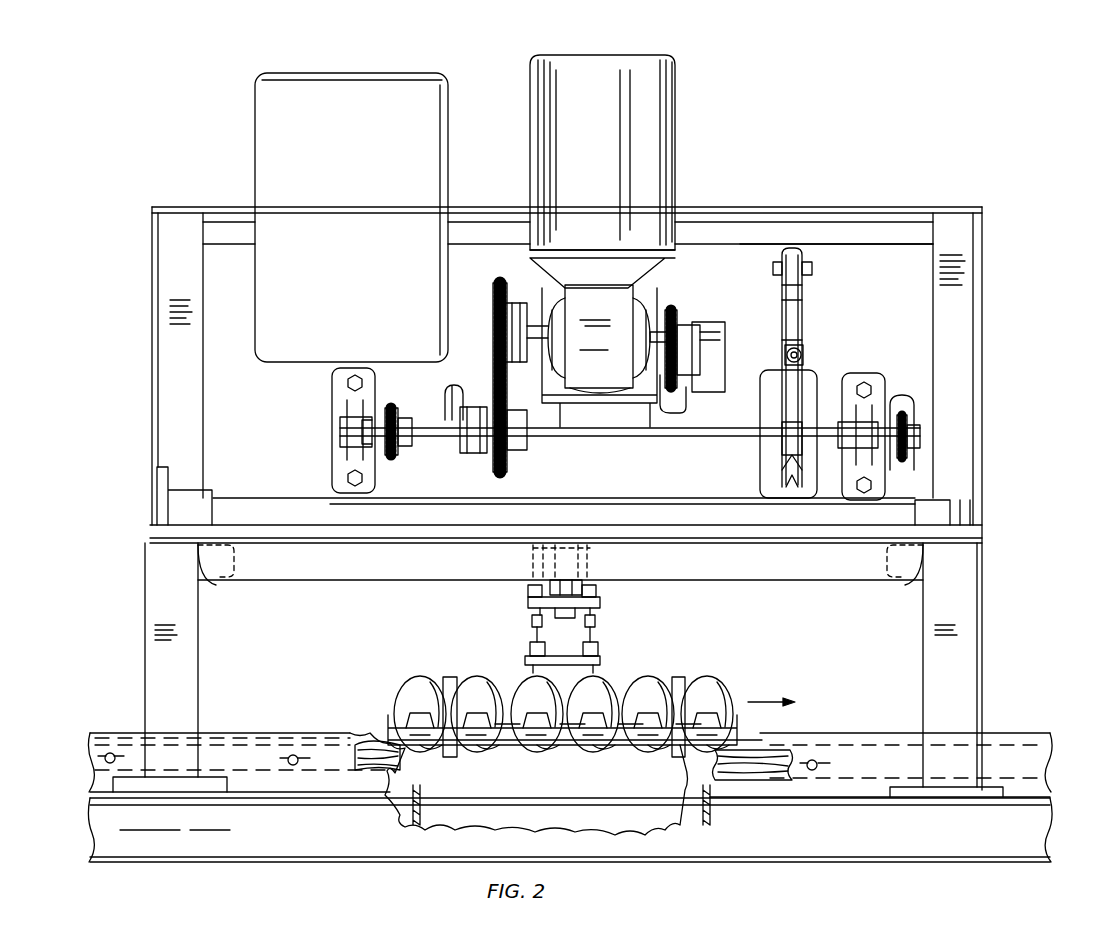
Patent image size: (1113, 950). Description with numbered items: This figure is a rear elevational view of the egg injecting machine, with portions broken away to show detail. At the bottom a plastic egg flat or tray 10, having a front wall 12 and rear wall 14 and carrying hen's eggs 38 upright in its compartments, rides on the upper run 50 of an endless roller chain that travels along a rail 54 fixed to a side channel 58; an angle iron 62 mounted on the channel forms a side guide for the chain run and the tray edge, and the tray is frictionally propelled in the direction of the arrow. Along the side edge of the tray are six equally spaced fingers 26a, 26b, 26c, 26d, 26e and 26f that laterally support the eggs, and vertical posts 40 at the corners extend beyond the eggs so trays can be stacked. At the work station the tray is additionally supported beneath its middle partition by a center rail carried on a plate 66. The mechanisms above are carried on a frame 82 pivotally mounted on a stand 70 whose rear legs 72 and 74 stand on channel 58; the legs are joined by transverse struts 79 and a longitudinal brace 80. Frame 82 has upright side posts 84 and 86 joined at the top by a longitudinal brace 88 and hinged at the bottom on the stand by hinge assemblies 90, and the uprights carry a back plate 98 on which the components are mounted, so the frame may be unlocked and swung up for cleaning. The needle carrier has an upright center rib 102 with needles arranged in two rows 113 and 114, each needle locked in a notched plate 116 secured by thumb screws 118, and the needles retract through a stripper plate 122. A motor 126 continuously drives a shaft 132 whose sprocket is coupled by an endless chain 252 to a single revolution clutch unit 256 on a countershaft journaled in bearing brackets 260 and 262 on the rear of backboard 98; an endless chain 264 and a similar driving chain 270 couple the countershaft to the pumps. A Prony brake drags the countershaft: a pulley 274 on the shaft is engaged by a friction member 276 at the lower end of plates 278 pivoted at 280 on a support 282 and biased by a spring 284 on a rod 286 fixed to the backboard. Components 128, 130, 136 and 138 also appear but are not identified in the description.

The egg flat or tray 10 is at (565, 750).
The front wall 12 is at (740, 732).
The rear wall 14 is at (388, 730).
The finger 26a is at (712, 716).
The finger 26b is at (650, 690).
The finger 26c is at (594, 714).
The finger 26d is at (536, 714).
The finger 26e is at (478, 714).
The finger 26f is at (400, 696).
The hen's eggs 38 is at (708, 690).
The vertical posts 40 is at (686, 681).
The upper run 50 is at (765, 744).
The rail 54 is at (740, 780).
The side channel 58 is at (1052, 835).
The angle iron 62 is at (1052, 770).
The plate 66 is at (683, 830).
The stand 70 is at (982, 660).
The rear leg 72 is at (190, 645).
The rear leg 74 is at (975, 621).
The transverse struts 79 is at (150, 588).
The longitudinal brace 80 is at (395, 581).
The frame 82 is at (985, 309).
The upright side post 84 is at (158, 288).
The upright side post 86 is at (965, 418).
The longitudinal brace 88 is at (765, 215).
The hinge assemblies 90 is at (157, 490).
The back plate 98 is at (880, 252).
The upright center rib 102 is at (585, 590).
The row of needles 113 is at (536, 625).
The row of needles 114 is at (595, 628).
The notched plate 116 is at (528, 603).
The thumb screws 118 is at (600, 600).
The stripper plate 122 is at (600, 653).
The motor 126 is at (676, 120).
The second motor 128 is at (600, 388).
The coupling hub 130 is at (700, 330).
The shaft 132 is at (493, 331).
The pinion gear 136 is at (672, 314).
The gear bracket 138 is at (680, 410).
The endless chain 252 is at (490, 360).
The single revolution clutch unit 256 is at (462, 452).
The bearing bracket 260 is at (332, 400).
The bearing bracket 262 is at (870, 373).
The endless chain 264 is at (392, 412).
The driving chain 270 is at (900, 466).
The pulley 274 is at (766, 488).
The friction member 276 is at (790, 490).
The plates 278 is at (782, 340).
The pivot 280 is at (812, 270).
The support 282 is at (800, 250).
The spring 284 is at (803, 364).
The rod 286 is at (803, 354).